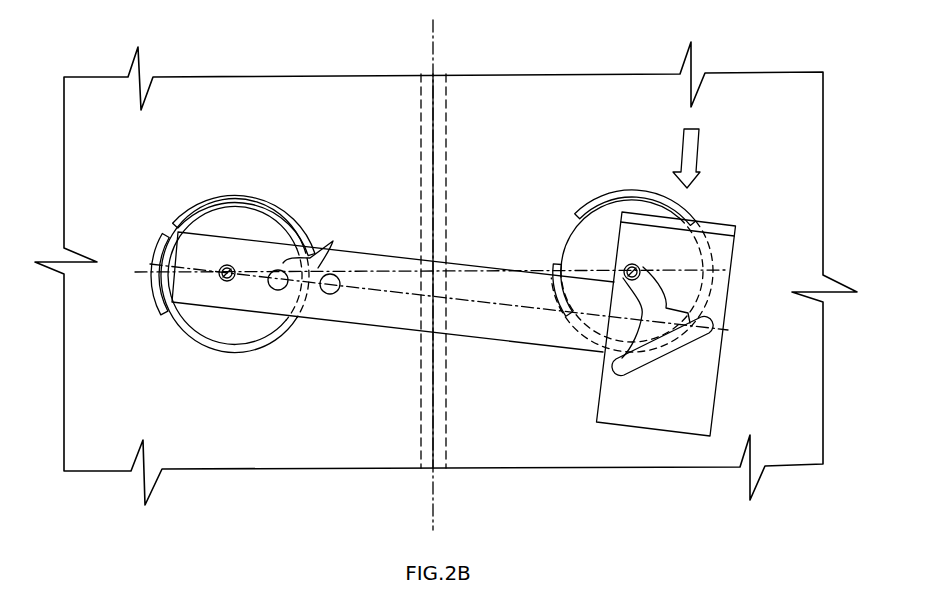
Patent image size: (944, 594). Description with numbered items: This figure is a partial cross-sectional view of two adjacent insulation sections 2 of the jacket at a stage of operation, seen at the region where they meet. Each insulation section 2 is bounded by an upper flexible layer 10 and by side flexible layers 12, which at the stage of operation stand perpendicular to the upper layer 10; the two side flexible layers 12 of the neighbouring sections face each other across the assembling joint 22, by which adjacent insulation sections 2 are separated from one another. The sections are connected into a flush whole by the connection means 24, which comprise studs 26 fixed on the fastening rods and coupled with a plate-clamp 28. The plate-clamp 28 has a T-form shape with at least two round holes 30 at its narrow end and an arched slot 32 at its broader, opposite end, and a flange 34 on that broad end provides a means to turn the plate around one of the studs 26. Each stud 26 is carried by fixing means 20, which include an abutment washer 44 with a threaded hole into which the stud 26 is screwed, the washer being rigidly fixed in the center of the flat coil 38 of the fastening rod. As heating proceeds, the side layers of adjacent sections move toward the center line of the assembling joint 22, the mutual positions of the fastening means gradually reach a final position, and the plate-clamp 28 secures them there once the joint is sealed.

The insulation section 2 is at (446, 272).
The upper flexible layer 10 is at (204, 104).
The side flexible layers 12 is at (424, 175).
The fixing means 20 is at (213, 322).
The assembling joint 22 is at (436, 76).
The connection means 24 is at (343, 329).
The stud 26 is at (228, 266).
The plate-clamp 28 is at (485, 271).
The round holes 30 is at (337, 243).
The arched slot 32 is at (640, 358).
The flange 34 is at (712, 216).
The flat coil 38 is at (246, 197).
The abutment washer 44 is at (229, 223).